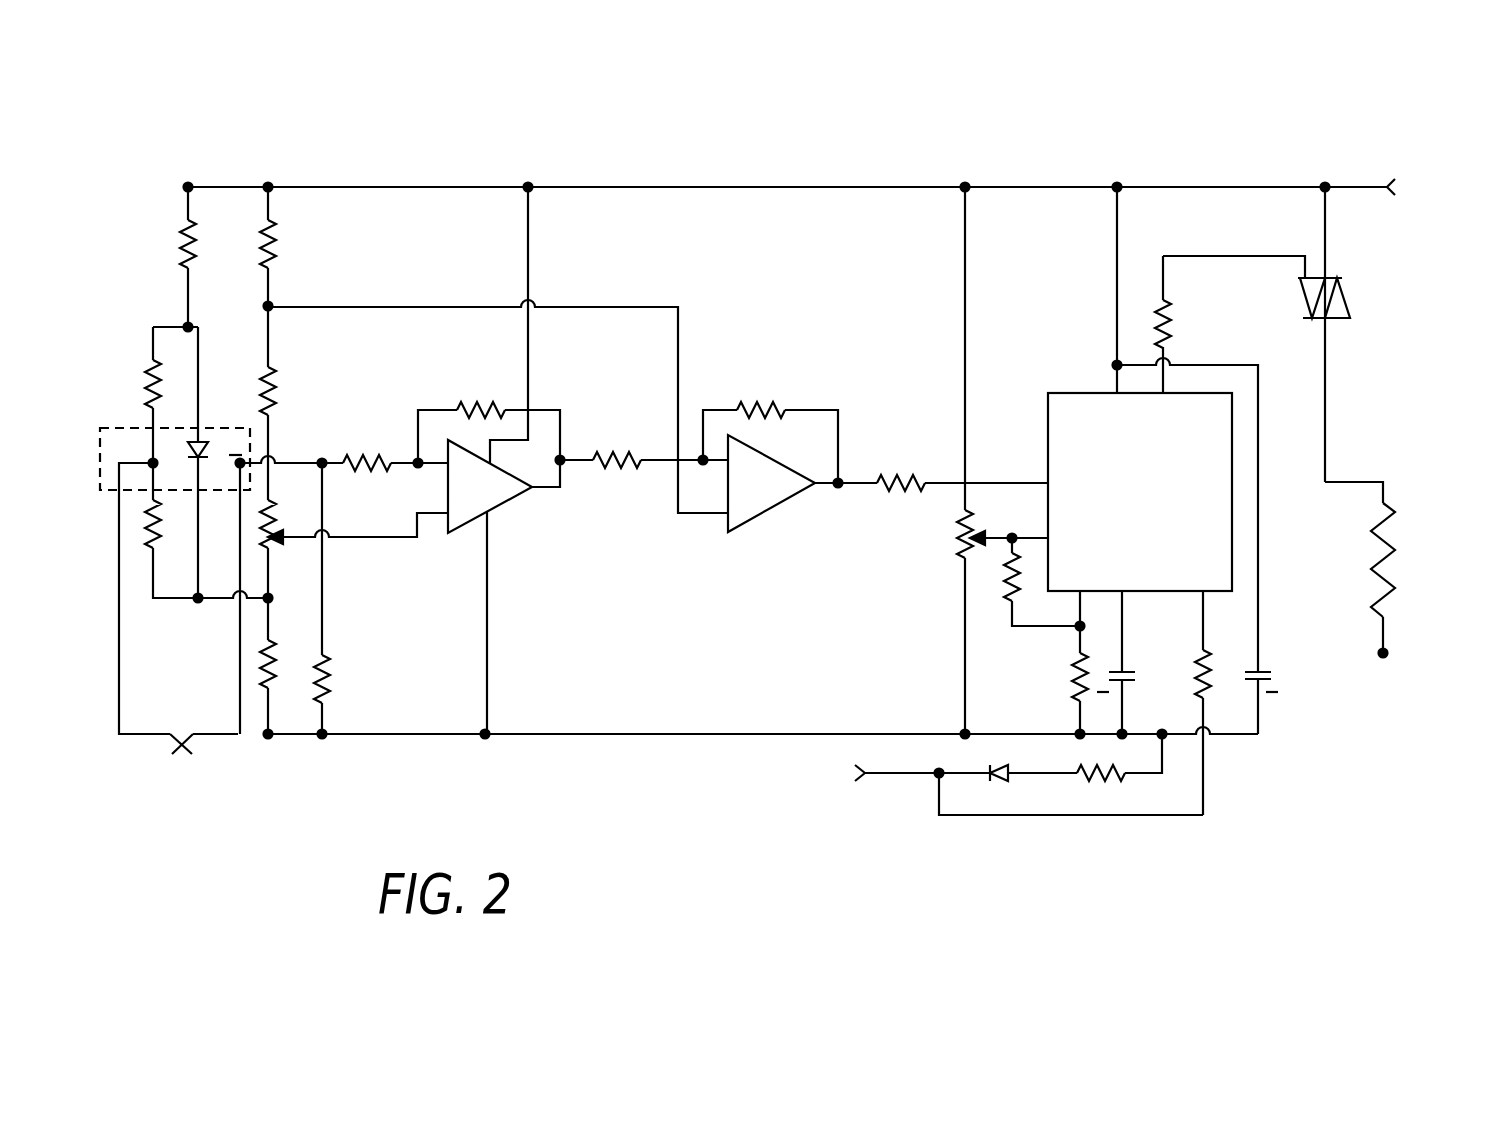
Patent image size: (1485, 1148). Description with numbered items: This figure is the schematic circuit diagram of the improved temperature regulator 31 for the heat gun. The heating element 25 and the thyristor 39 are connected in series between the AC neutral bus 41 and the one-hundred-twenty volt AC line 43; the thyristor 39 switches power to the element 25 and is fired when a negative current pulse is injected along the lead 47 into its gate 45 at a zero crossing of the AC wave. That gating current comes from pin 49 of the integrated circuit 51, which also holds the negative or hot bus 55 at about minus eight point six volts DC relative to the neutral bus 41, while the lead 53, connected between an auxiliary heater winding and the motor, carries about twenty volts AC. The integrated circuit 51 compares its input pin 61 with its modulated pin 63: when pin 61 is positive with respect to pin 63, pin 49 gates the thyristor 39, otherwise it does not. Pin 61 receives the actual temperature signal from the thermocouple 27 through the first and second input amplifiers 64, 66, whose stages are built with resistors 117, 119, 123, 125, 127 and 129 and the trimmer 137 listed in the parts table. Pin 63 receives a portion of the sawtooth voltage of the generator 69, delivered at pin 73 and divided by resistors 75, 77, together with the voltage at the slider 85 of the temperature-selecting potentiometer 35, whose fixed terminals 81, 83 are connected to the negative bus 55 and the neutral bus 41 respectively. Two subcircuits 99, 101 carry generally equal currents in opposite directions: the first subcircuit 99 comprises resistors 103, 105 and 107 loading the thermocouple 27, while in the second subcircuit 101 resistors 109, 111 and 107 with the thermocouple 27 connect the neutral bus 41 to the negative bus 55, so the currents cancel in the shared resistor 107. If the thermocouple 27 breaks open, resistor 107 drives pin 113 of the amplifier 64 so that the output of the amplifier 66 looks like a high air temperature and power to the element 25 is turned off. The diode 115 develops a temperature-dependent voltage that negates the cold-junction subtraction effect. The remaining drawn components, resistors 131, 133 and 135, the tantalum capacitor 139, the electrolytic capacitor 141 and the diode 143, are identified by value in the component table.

The heating element 25 is at (1375, 543).
The thermocouple 27 is at (186, 748).
The regulator 31 is at (486, 738).
The temperature-selecting potentiometer 35 is at (962, 546).
The thyristor 39 is at (1342, 294).
The AC neutral bus 41 is at (1167, 185).
The 120 VAC line 43 is at (1390, 650).
The gate 45 is at (1303, 266).
The lead 47 is at (1197, 254).
The pin 49 is at (1165, 400).
The integrated circuit 51 is at (1193, 491).
The lead 53 is at (875, 786).
The negative bus 55 is at (748, 737).
The input pin 61 is at (1052, 480).
The modulated pin 63 is at (1052, 538).
The first input amplifier 64 is at (505, 512).
The second input amplifier 66 is at (728, 530).
The sawtooth voltage generator 69 is at (1032, 668).
The pin 73 is at (1080, 593).
The voltage-dividing resistor 75 is at (1007, 585).
The voltage-dividing resistor 77 is at (1078, 695).
The fixed terminal 81 is at (960, 732).
The fixed terminal 83 is at (966, 184).
The slider terminal 85 is at (996, 534).
The first subcircuit 99 is at (353, 675).
The second subcircuit 101 is at (150, 295).
The resistor 103 is at (150, 545).
The resistor 105 is at (262, 655).
The resistor 107 is at (330, 660).
The resistor 109 is at (150, 393).
The resistor 111 is at (187, 238).
The pin 113 is at (418, 455).
The diode 115 is at (198, 442).
The resistor 117 is at (275, 245).
The resistor 119 is at (482, 407).
The resistor 123 is at (368, 458).
The resistor 125 is at (757, 403).
The resistor 127 is at (613, 466).
The resistor 129 is at (892, 480).
The resistor 131 is at (1207, 698).
The resistor 133 is at (1167, 330).
The resistor 135 is at (1125, 778).
The trimmer resistor 137 is at (276, 544).
The tantalum capacitor 139 is at (1132, 670).
The electrolytic capacitor 141 is at (1270, 679).
The diode 143 is at (1000, 787).